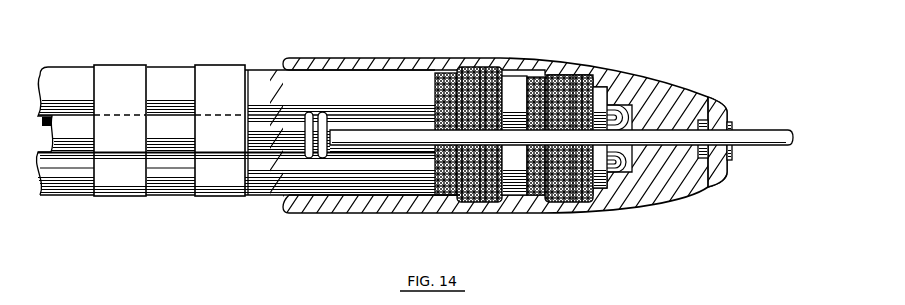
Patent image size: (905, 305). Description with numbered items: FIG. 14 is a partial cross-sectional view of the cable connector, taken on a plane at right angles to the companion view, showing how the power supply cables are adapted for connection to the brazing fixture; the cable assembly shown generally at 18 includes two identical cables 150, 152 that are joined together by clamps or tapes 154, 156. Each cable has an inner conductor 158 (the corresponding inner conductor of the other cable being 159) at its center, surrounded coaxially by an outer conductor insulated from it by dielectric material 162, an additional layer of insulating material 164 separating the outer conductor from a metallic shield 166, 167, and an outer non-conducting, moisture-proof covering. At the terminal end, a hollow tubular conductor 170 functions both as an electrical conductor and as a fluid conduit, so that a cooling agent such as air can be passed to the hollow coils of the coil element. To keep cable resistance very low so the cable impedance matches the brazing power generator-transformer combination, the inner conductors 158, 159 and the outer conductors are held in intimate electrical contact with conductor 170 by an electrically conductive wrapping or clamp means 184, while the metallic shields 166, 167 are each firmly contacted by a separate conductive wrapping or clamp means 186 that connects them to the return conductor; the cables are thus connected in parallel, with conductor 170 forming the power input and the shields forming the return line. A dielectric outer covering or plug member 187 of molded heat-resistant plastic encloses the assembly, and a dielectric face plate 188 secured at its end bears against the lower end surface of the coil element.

The coaxial cable 18 is at (75, 65).
The cable 150 is at (163, 78).
The cable 152 is at (172, 180).
The clamp or tape 154 is at (125, 185).
The clamp or tape 156 is at (243, 192).
The inner conductor 158 is at (624, 167).
The inner conductor 159 is at (624, 113).
The dielectric material 162 is at (600, 97).
The layer of insulating material 164 is at (516, 85).
The metallic shield 166 is at (447, 75).
The metallic shield 167 is at (448, 196).
The hollow tubular conductor 170 is at (775, 144).
The electrically conductive wrapping or clamp means 184 is at (585, 73).
The conductive wrapping or clamp means 186 is at (472, 67).
The outer covering or plug member 187 is at (690, 100).
The dielectric face plate 188 is at (729, 113).